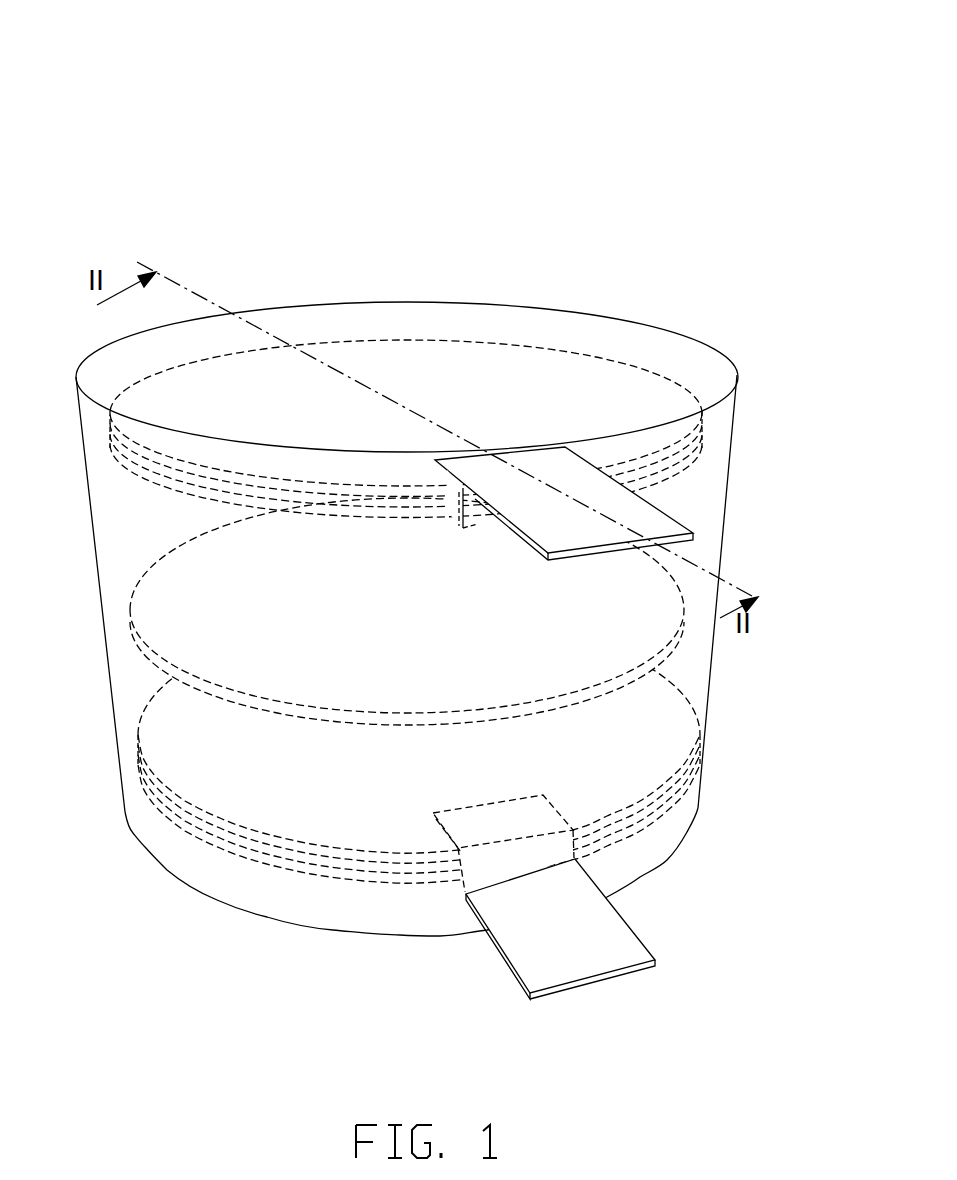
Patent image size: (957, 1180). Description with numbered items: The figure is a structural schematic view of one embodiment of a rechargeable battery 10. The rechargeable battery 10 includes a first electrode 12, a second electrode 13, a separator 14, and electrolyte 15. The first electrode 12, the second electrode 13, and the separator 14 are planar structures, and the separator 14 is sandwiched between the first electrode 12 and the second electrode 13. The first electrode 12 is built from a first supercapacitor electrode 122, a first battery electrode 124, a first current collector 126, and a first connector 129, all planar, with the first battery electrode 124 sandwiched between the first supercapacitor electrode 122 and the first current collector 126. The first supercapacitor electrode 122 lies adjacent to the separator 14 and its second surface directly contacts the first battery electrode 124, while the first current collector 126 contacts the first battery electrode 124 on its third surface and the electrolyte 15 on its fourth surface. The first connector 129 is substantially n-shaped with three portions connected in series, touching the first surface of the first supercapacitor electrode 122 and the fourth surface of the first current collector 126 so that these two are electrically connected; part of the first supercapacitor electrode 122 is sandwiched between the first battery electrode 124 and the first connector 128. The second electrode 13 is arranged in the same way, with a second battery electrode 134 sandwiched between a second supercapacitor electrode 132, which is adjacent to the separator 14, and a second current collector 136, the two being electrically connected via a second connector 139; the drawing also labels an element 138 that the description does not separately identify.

The rechargeable battery 10 is at (337, 73).
The first electrode 12 is at (500, 498).
The second electrode 13 is at (506, 808).
The separator 14 is at (627, 672).
The electrolyte 15 is at (608, 325).
The first supercapacitor electrode 122 is at (702, 470).
The first battery electrode 124 is at (702, 448).
The first current collector 126 is at (702, 432).
The first connector 128 is at (690, 546).
The first connector 129 is at (480, 517).
The second supercapacitor electrode 132 is at (694, 752).
The second battery electrode 134 is at (694, 772).
The second current collector 136 is at (692, 811).
The second terminal plate 138 is at (639, 929).
The second connector 139 is at (543, 852).